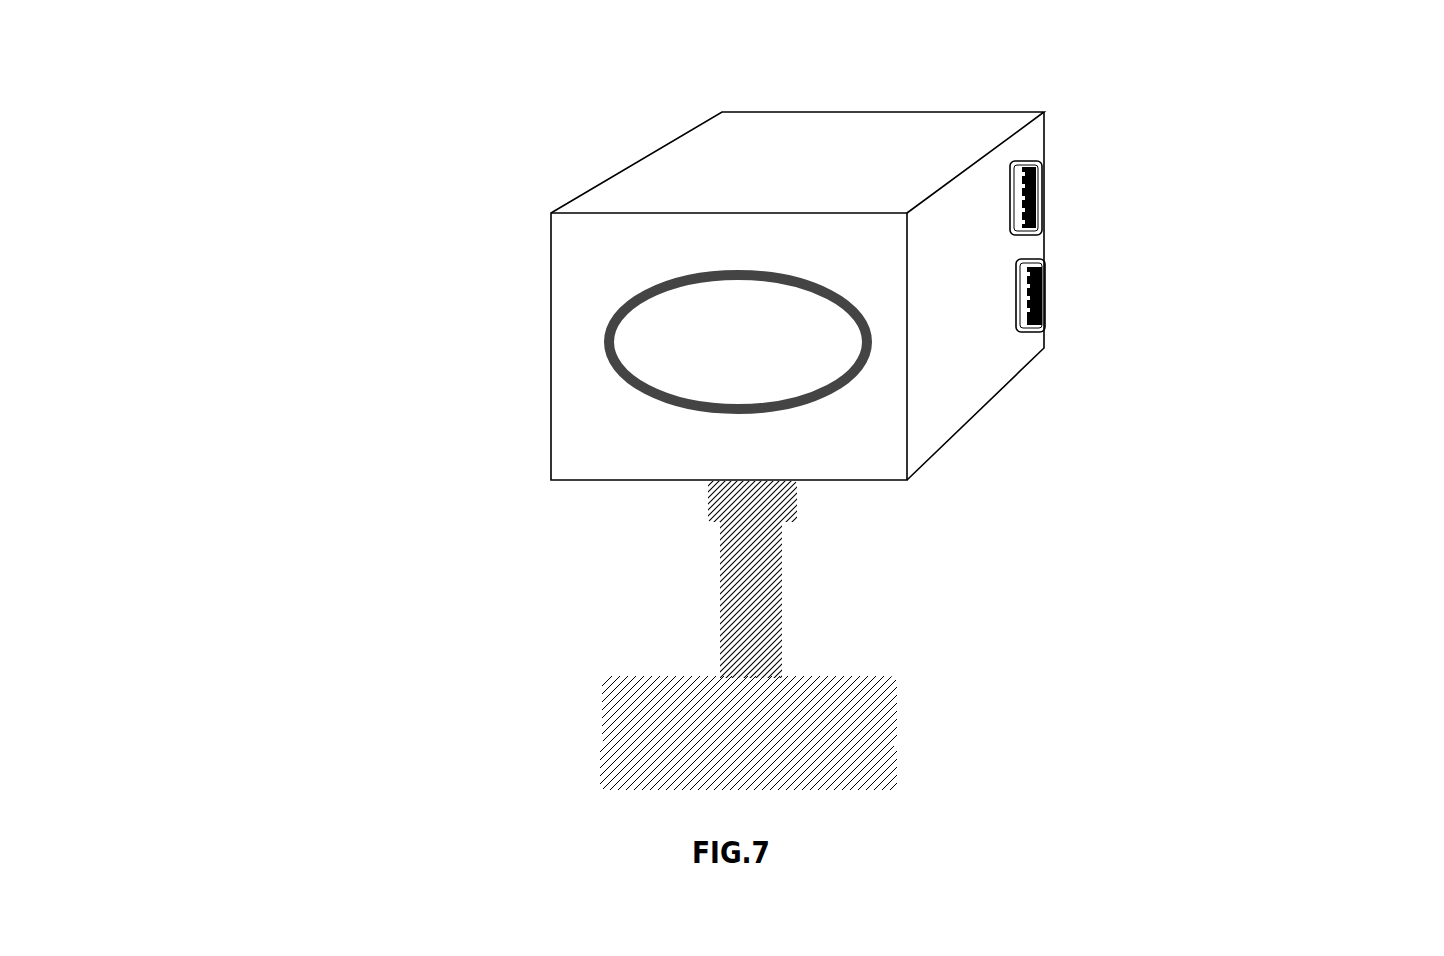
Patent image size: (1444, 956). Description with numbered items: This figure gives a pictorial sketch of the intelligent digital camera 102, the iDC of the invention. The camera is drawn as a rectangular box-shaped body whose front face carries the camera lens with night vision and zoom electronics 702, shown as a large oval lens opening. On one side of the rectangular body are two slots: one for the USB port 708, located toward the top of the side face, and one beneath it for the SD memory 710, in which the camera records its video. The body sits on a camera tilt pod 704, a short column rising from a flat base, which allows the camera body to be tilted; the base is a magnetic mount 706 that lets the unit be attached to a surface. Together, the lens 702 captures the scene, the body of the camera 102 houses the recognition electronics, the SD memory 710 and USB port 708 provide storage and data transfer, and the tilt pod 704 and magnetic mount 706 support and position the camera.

The intelligent digital camera 102 is at (867, 157).
The camera lens with night vision and zoom electronics 702 is at (638, 346).
The camera tilt pod 704 is at (700, 716).
The magnetic mount 706 is at (897, 759).
The USB port 708 is at (1085, 198).
The SD memory 710 is at (1042, 298).